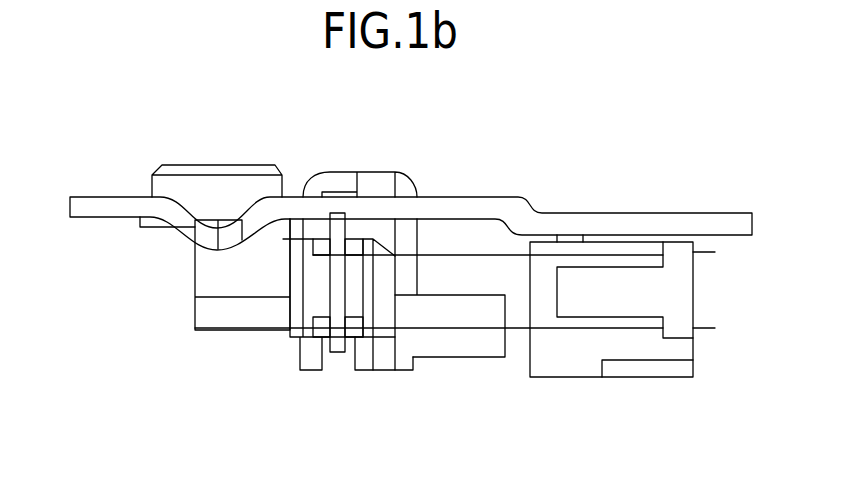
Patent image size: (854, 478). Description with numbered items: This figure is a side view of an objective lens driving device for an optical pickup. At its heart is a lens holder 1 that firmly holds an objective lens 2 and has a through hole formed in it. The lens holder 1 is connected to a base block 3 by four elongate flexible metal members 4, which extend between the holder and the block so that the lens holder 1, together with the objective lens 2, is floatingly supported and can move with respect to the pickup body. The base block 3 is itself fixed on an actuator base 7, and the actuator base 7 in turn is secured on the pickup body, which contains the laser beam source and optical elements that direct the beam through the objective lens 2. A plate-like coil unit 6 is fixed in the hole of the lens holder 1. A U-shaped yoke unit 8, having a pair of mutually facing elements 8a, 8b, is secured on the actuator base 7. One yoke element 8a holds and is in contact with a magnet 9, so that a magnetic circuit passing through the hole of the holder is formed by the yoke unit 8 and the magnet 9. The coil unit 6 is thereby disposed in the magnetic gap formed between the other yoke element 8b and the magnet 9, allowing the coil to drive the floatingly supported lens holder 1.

The lens holder 1 is at (205, 285).
The objective lens 2 is at (191, 186).
The base block 3 is at (578, 362).
The elongate flexible metal members 4 is at (490, 253).
The coil unit 6 is at (337, 347).
The actuator base 7 is at (635, 222).
The U-shaped yoke unit 8 is at (343, 180).
The yoke element 8a is at (415, 365).
The yoke element 8b is at (310, 355).
The magnet 9 is at (375, 362).